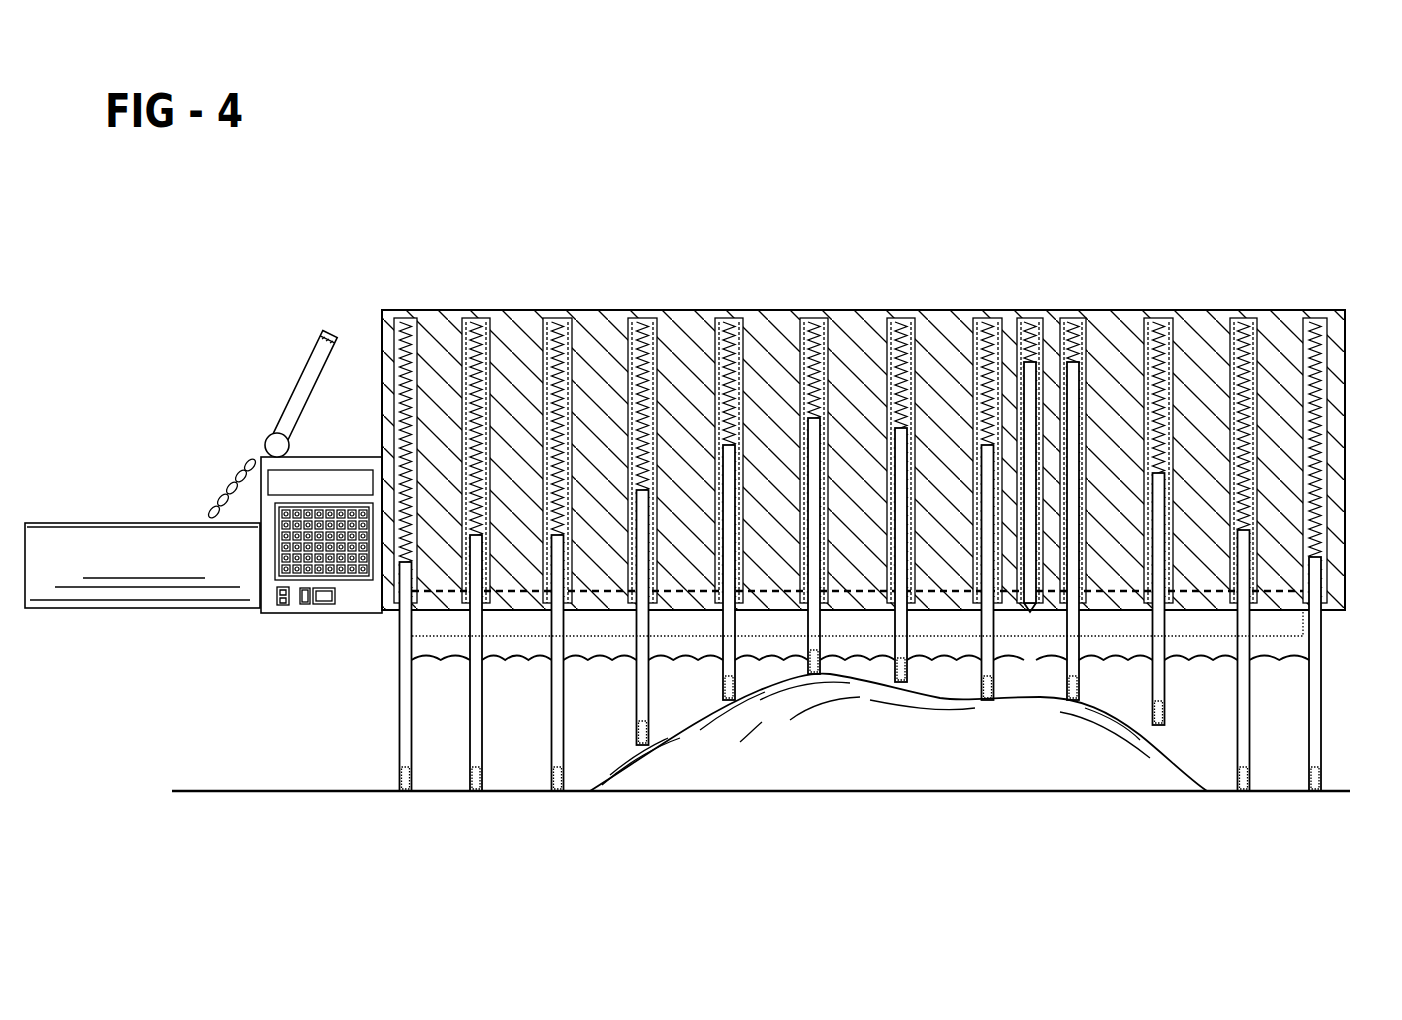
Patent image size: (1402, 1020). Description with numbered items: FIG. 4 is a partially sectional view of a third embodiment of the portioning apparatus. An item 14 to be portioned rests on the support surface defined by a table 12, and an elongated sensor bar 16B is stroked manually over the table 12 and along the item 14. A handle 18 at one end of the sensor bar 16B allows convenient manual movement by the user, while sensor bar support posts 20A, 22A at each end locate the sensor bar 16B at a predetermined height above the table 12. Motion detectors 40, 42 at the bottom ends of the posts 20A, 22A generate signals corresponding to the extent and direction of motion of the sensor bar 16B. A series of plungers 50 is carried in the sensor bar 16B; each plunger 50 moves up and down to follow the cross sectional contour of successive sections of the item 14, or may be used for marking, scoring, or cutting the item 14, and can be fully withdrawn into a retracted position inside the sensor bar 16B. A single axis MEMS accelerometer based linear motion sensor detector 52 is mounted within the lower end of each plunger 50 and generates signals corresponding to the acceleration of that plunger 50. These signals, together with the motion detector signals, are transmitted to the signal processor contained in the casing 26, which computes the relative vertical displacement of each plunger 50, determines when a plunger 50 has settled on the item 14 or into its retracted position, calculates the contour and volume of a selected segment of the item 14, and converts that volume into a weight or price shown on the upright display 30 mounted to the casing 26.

The table 12 is at (240, 791).
The item to be portioned 14 is at (1097, 720).
The sensor bar 16B is at (376, 303).
The handle 18 is at (123, 540).
The sensor bar support post 20A is at (400, 683).
The sensor bar support post 22A is at (1317, 718).
The casing 26 is at (249, 587).
The upright display 30 is at (318, 352).
The motion detector 40 is at (400, 770).
The motion detector 42 is at (1310, 765).
The plunger 50 is at (472, 722).
The MEMS accelerometer based linear motion sensor detector 52 is at (566, 778).